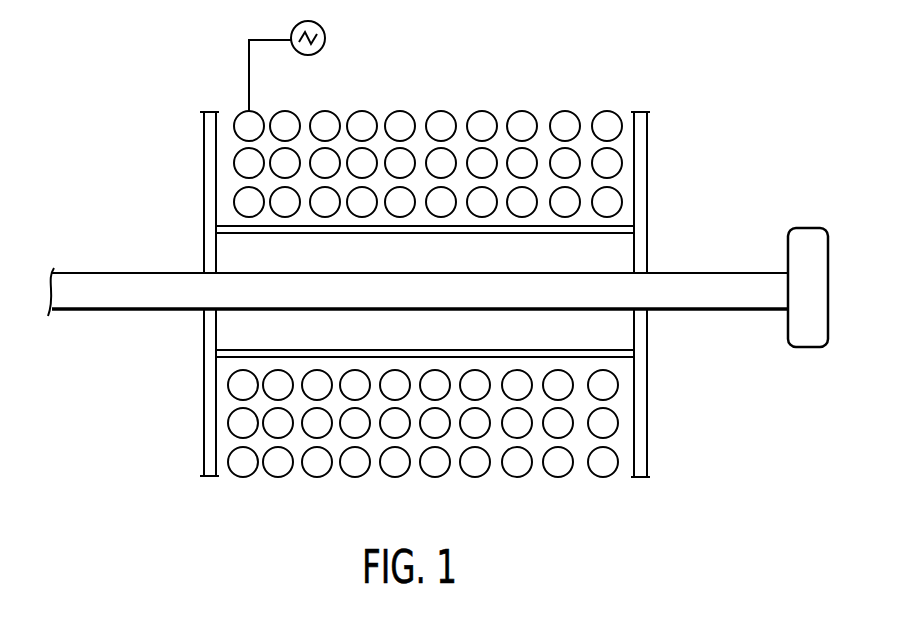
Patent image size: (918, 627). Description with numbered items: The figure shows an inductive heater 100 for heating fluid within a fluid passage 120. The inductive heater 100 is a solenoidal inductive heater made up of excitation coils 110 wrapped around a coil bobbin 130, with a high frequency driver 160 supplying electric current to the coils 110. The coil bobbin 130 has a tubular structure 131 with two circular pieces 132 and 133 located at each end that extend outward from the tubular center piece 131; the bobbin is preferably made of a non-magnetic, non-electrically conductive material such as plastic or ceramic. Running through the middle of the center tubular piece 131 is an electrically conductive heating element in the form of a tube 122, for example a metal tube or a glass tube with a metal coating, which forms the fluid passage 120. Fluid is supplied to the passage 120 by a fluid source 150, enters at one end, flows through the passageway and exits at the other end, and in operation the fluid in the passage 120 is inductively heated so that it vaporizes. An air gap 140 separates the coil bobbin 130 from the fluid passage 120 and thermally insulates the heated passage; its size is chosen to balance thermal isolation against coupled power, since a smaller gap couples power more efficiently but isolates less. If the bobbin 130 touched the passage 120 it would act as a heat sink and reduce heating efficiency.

The inductive heater 100 is at (126, 89).
The excitation coils 110 is at (524, 116).
The fluid passage 120 is at (160, 326).
The tube 122 is at (92, 272).
The coil bobbin 130 is at (664, 437).
The tubular structure 131 is at (286, 236).
The circular piece 132 is at (648, 170).
The circular piece 133 is at (205, 173).
The air gap 140 is at (494, 264).
The fluid source 150 is at (792, 330).
The high frequency driver 160 is at (325, 39).